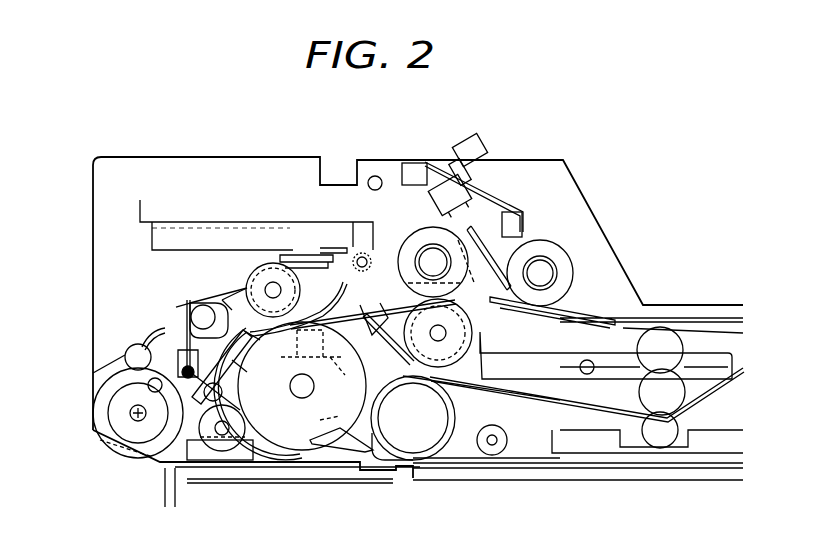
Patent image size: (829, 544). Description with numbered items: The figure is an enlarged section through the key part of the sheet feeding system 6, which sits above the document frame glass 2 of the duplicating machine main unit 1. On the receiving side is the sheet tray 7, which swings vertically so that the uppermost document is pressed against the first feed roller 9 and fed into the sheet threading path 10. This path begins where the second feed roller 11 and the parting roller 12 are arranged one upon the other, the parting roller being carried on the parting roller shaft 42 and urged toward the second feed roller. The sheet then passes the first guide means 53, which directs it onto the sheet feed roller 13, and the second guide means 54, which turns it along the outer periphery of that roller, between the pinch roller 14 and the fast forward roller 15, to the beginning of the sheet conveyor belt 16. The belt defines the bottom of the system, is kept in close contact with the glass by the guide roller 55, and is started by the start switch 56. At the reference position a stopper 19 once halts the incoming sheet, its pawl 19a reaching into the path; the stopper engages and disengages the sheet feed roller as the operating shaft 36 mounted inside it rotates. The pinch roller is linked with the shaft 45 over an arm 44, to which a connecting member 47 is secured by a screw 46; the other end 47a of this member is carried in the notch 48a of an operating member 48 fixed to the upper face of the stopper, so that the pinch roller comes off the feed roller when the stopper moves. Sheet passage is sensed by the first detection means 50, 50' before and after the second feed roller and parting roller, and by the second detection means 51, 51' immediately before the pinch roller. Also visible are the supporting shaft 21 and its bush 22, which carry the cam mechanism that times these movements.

The duplicating machine main unit 1 is at (162, 490).
The document frame glass 2 is at (581, 470).
The sheet feeding system 6 is at (88, 187).
The sheet tray 7 is at (610, 316).
The first feed roller 9 is at (558, 260).
The sheet threading path 10 is at (322, 310).
The second feed roller 11 is at (412, 247).
The parting roller 12 is at (460, 358).
The sheet feed roller 13 is at (365, 358).
The pinch roller 14 is at (252, 270).
The fast forward roller 15 is at (268, 438).
The sheet conveyor belt 16 is at (445, 462).
The stopper 19 is at (241, 322).
The pawl 19a is at (240, 362).
The supporting shaft 21 is at (373, 265).
The bush 22 is at (558, 272).
The operating shaft 36 is at (248, 426).
The parting roller shaft 42 is at (438, 342).
The arm 44 is at (222, 298).
The shaft 45 is at (196, 304).
The screw 46 is at (176, 306).
The connecting member 47 is at (186, 343).
The other end of connecting member 47a is at (124, 358).
The operating member 48 is at (223, 393).
The notch 48a is at (142, 336).
The first detection means 50 is at (474, 226).
The first detection means 50' is at (606, 349).
The second detection means 51 is at (306, 250).
The second detection means 51' is at (302, 386).
The first guide means 53 is at (372, 316).
The second guide means 54 is at (356, 240).
The guide roller 55 is at (497, 436).
The start switch 56 is at (466, 138).